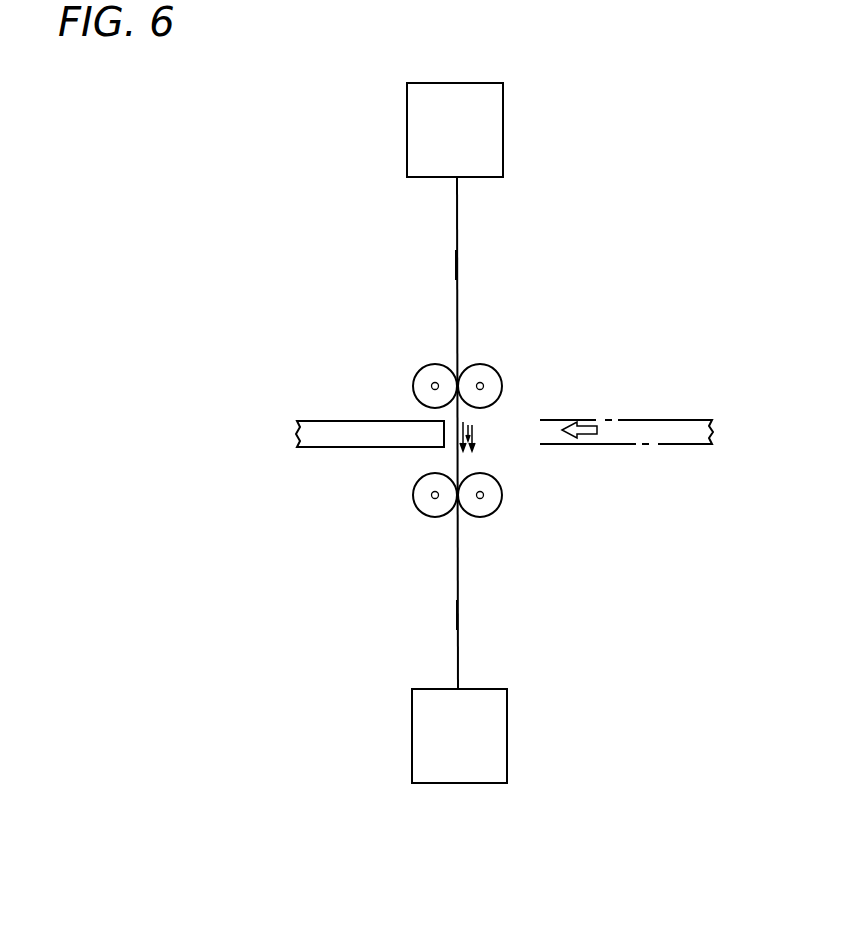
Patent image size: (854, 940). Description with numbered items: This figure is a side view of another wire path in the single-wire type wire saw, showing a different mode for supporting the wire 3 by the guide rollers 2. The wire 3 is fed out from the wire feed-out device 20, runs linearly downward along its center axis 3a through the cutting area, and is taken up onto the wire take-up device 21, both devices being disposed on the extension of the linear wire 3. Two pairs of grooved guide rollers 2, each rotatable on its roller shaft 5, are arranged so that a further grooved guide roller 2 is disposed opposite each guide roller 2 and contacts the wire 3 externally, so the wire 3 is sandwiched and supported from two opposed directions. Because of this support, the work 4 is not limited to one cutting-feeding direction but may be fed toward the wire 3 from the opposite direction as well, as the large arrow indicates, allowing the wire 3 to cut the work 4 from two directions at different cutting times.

The grooved guide roller 2 is at (419, 375).
The wire 3 is at (458, 217).
The center axis of the wire 3a is at (455, 263).
The work 4 is at (365, 419).
The roller shaft 5 is at (432, 387).
The wire feed-out device 20 is at (503, 122).
The wire take-up device 21 is at (507, 761).